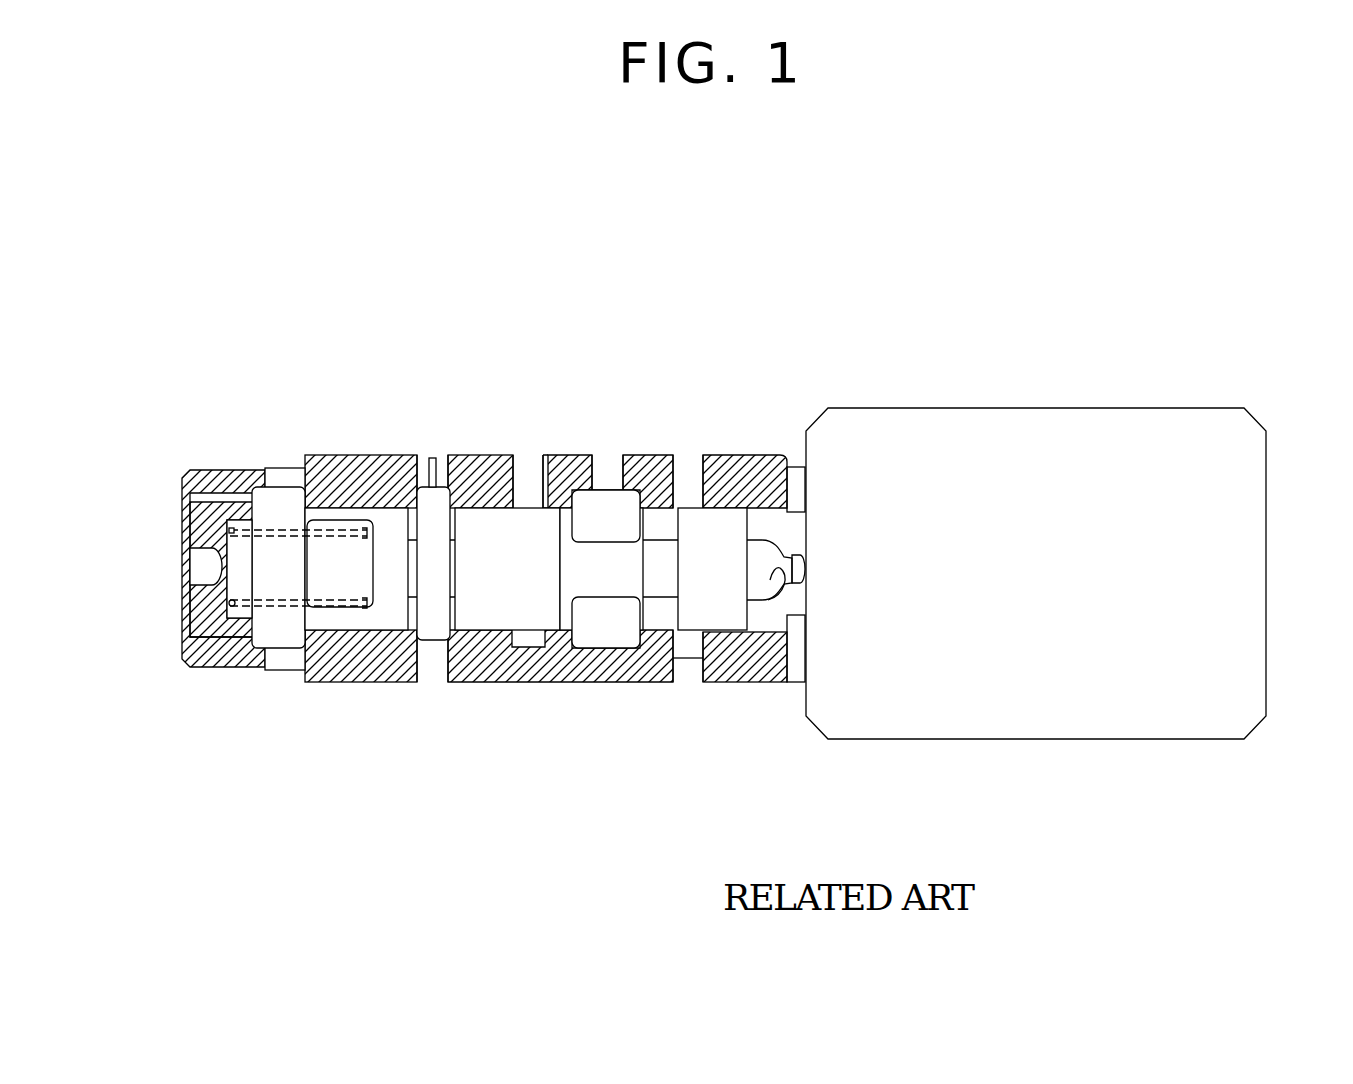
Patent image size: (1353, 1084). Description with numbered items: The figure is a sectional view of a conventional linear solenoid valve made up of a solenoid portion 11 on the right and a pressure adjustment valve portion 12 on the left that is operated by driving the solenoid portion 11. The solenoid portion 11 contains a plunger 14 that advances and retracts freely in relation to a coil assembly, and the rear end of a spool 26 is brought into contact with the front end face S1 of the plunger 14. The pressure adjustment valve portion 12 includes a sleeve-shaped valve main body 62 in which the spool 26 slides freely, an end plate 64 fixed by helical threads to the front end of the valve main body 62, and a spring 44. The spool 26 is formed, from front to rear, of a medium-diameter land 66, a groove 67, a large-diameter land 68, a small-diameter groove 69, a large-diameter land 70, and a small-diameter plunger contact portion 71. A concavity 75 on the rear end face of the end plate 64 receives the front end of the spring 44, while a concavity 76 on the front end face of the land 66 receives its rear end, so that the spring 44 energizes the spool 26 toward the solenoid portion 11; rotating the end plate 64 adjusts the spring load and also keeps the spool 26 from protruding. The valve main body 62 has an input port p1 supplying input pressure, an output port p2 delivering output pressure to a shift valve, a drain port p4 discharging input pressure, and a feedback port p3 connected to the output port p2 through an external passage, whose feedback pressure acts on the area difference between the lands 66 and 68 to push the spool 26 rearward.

The solenoid portion 11 is at (1050, 406).
The pressure adjustment valve portion 12 is at (523, 341).
The plunger 14 is at (797, 552).
The spool 26 is at (728, 498).
The spring 44 is at (233, 607).
The valve main body 62 is at (338, 453).
The end plate 64 is at (212, 497).
The medium-diameter land 66 is at (390, 614).
The groove 67 is at (417, 578).
The large-diameter land 68 is at (490, 578).
The small-diameter groove 69 is at (595, 578).
The large-diameter land 70 is at (700, 578).
The plunger contact portion 71 is at (758, 585).
The concavity 75 is at (232, 580).
The concavity 76 is at (360, 587).
The input port p1 is at (527, 456).
The output port p2 is at (608, 458).
The feedback port p3 is at (432, 458).
The drain port p4 is at (688, 458).
The front end face S1 is at (780, 578).